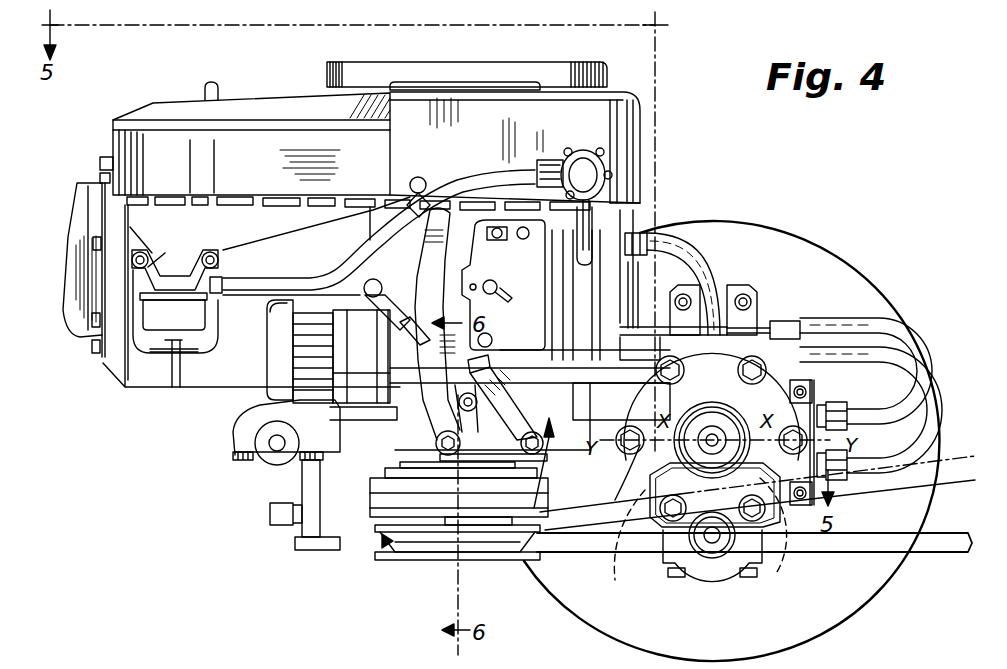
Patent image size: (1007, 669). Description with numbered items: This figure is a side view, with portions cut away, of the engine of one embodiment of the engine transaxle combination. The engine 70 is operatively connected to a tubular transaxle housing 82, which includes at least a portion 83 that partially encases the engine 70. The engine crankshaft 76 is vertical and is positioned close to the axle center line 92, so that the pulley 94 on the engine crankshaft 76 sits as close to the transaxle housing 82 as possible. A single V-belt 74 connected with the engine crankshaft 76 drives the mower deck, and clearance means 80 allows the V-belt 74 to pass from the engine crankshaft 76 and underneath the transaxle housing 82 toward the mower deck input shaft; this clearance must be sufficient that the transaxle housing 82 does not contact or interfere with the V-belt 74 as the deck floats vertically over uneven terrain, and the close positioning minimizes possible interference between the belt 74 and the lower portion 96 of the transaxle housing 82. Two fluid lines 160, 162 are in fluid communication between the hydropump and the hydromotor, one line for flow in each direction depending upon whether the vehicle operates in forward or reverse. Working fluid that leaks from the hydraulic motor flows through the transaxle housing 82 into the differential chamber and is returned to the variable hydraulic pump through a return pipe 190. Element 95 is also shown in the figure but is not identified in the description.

The engine 70 is at (100, 182).
The V-belt 74 is at (973, 453).
The engine crankshaft 76 is at (445, 458).
The clearance means 80 is at (782, 540).
The transaxle housing 82 is at (615, 500).
The portion of the transaxle housing 83 is at (557, 463).
The axle center line 92 is at (718, 435).
The pulley 94 is at (410, 560).
The clutch 95 is at (385, 500).
The lower portion of the transaxle housing 96 is at (643, 497).
The fluid line 160 is at (932, 408).
The fluid line 162 is at (912, 350).
The return pipe 190 is at (684, 240).